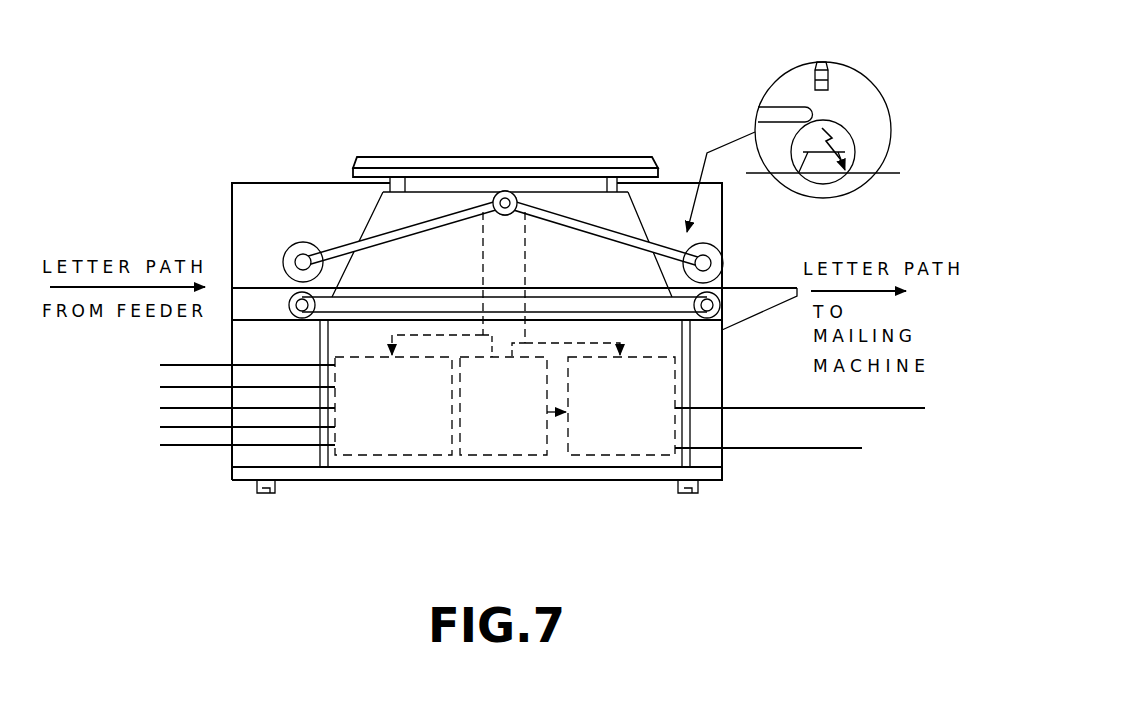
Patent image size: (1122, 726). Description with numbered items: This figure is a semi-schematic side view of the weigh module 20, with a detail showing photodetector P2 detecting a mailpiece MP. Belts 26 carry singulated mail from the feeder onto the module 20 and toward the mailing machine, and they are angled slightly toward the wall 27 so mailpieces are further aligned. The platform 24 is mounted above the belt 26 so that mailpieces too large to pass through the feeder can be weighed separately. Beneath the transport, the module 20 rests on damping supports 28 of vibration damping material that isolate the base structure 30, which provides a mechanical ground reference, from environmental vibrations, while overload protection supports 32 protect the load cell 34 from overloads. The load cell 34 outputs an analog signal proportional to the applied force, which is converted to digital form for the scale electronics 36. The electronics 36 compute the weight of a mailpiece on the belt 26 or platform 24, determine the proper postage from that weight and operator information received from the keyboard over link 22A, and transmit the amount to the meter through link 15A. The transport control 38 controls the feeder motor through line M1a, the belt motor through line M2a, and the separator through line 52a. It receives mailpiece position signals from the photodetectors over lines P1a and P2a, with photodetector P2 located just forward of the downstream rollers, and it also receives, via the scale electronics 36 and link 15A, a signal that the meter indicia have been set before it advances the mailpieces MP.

The scale module 20 is at (235, 123).
The platform 24 is at (455, 157).
The belts 26 is at (641, 290).
The wall 27 is at (234, 222).
The damping supports 28 is at (257, 495).
The base structure 30 is at (492, 482).
The overload protection supports 32 is at (685, 348).
The load cell 34 is at (520, 455).
The scale electronics 36 is at (620, 455).
The transport control 38 is at (387, 455).
The line 52a is at (192, 446).
The line P1a is at (172, 364).
The line P2a is at (172, 387).
The line M1a is at (172, 408).
The line M2a is at (172, 427).
The link 15A is at (893, 408).
The link 22A is at (830, 448).
The mailpieces MP is at (781, 107).
The photodetector P2 is at (860, 64).